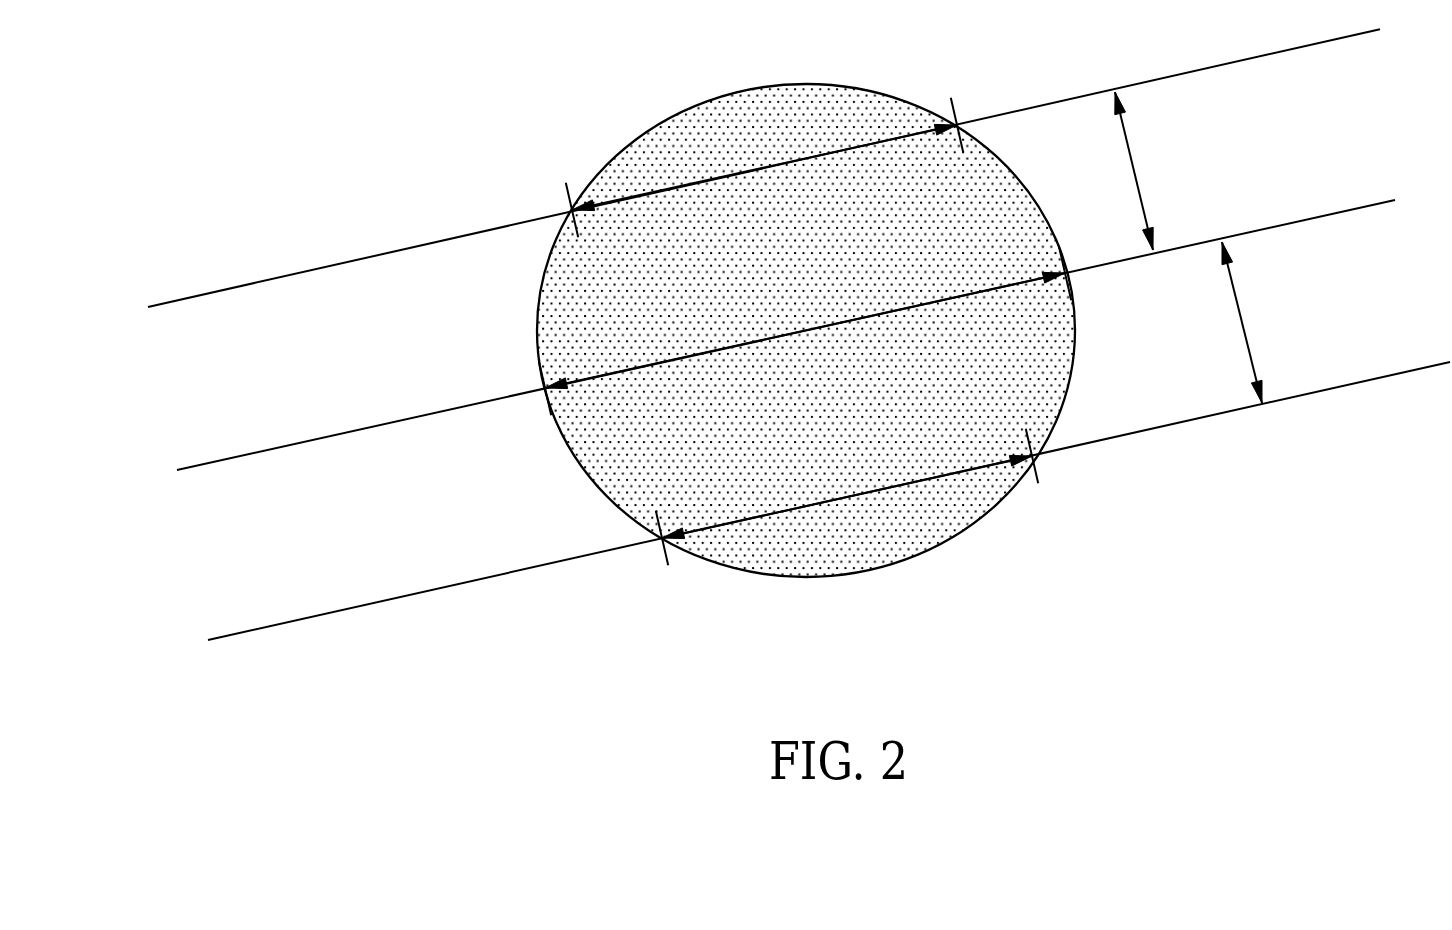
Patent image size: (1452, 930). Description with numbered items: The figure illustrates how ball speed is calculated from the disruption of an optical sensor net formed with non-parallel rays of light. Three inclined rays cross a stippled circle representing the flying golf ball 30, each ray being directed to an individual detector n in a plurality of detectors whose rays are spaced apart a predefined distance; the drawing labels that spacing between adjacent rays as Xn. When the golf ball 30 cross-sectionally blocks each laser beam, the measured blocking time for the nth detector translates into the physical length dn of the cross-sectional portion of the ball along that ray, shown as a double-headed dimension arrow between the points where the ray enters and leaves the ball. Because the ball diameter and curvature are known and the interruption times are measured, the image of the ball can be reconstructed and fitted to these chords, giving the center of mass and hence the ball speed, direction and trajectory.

The golf ball 30 is at (930, 533).
The detector n is at (746, 177).
The length of the distance for the ball that blocks off light directed to the nth de dn is at (764, 168).
The spacing between scan lines n and n+1 Xn is at (1151, 171).